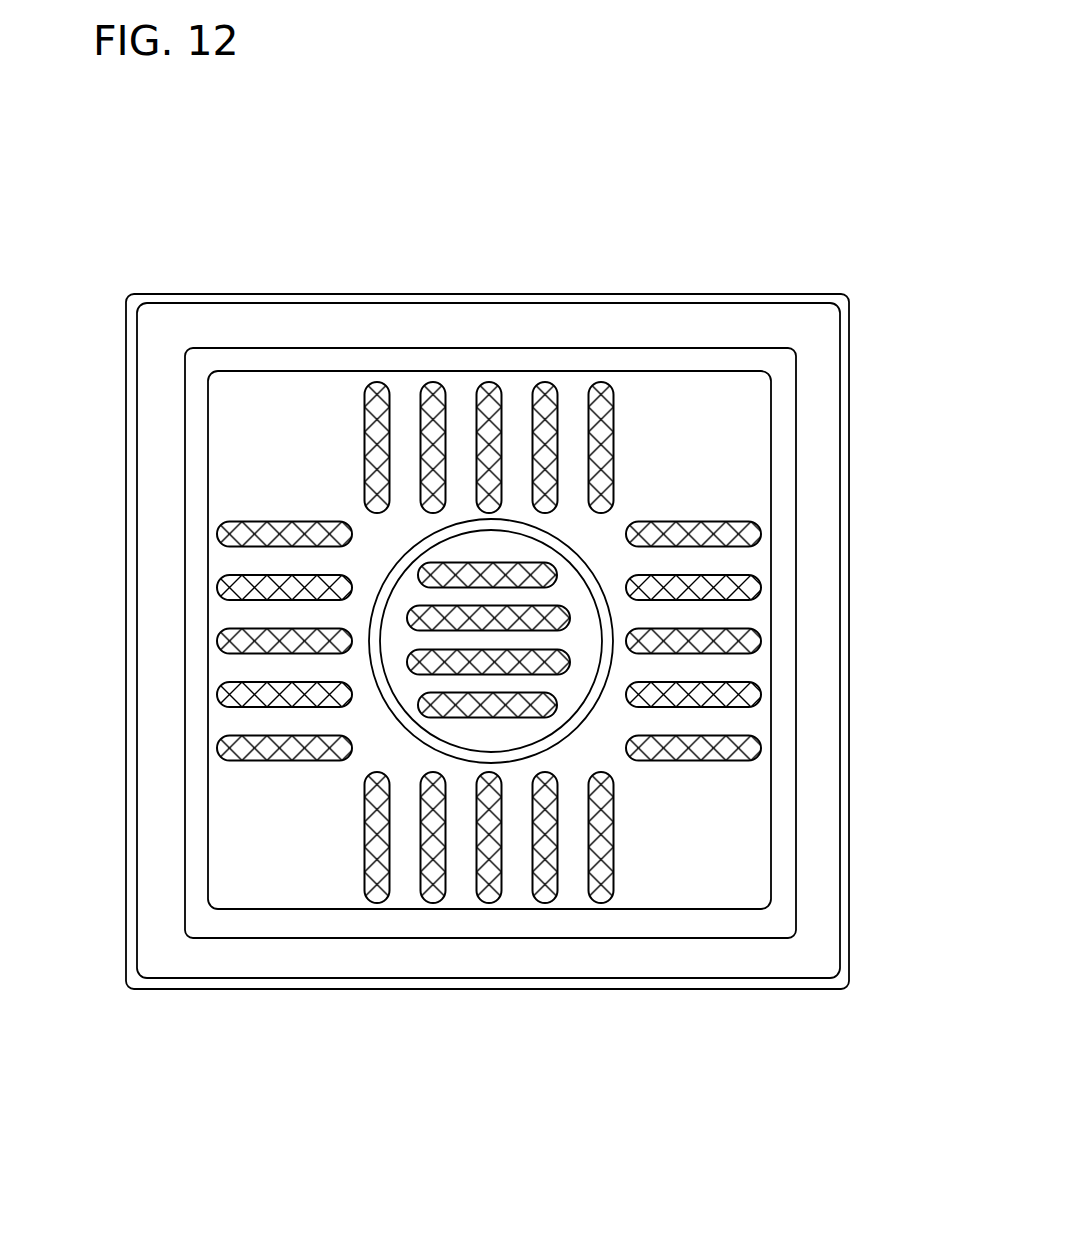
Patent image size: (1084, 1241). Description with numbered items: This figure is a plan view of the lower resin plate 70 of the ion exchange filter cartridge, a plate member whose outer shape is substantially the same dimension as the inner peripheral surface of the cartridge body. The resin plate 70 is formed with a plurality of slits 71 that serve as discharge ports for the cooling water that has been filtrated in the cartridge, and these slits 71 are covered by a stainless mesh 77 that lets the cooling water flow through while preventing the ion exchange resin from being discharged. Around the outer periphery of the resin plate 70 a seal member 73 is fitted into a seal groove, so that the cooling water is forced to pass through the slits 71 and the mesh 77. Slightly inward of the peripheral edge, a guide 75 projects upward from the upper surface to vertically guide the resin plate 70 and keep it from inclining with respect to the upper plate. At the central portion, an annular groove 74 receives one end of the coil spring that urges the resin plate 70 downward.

The resin plate 70 is at (757, 229).
The slits 71 is at (487, 386).
The seal member 73 is at (553, 298).
The annular groove 74 is at (572, 728).
The guide 75 is at (337, 352).
The stainless mesh 77 is at (494, 386).